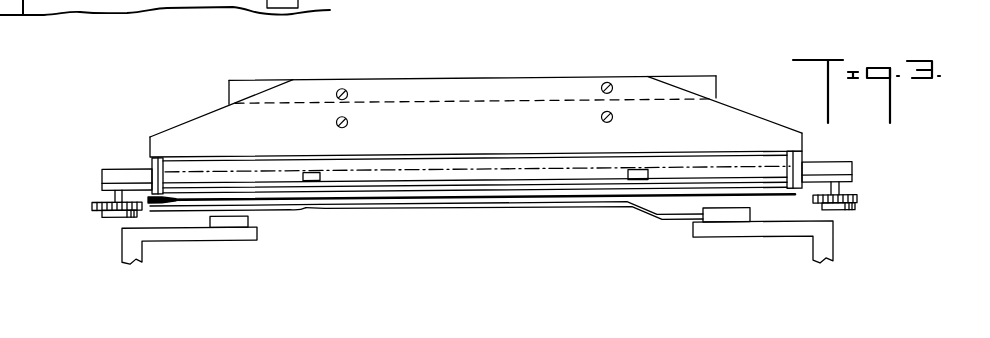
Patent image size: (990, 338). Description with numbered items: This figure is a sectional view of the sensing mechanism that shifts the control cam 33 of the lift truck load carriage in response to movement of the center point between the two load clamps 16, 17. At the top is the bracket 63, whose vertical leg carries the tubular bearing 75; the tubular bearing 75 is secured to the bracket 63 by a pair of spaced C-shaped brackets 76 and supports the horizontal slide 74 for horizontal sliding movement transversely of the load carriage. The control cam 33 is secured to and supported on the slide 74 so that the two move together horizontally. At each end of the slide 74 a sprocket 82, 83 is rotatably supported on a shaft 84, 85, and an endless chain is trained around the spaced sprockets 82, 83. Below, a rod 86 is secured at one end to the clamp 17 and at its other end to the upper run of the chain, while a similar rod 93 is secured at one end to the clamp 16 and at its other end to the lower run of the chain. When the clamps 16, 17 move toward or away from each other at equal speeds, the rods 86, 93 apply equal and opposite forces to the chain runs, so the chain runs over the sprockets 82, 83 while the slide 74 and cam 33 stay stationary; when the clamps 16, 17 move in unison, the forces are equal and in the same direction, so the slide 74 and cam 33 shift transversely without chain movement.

The bracket 63 is at (207, 120).
The control cam 33 is at (463, 176).
The rod 93 is at (298, 224).
The rod 86 is at (653, 225).
The tubular bearing 75 is at (110, 171).
The C-shaped brackets 76 is at (155, 163).
The shaft 84 is at (110, 196).
The sprocket 82 is at (103, 213).
The horizontal slide 74 is at (848, 168).
The shaft 85 is at (850, 192).
The sprocket 83 is at (857, 210).
The load clamp 16 is at (180, 238).
The load clamp 17 is at (783, 236).